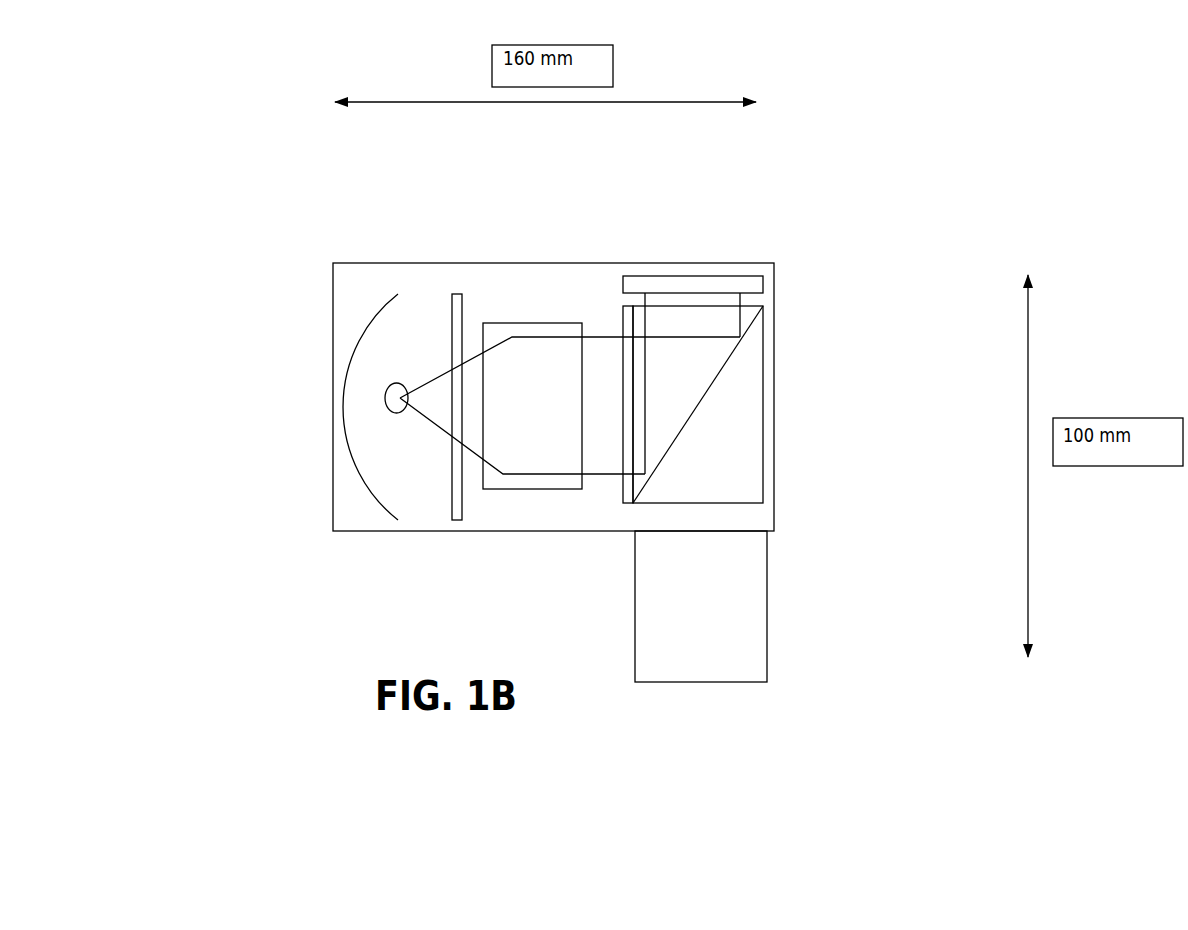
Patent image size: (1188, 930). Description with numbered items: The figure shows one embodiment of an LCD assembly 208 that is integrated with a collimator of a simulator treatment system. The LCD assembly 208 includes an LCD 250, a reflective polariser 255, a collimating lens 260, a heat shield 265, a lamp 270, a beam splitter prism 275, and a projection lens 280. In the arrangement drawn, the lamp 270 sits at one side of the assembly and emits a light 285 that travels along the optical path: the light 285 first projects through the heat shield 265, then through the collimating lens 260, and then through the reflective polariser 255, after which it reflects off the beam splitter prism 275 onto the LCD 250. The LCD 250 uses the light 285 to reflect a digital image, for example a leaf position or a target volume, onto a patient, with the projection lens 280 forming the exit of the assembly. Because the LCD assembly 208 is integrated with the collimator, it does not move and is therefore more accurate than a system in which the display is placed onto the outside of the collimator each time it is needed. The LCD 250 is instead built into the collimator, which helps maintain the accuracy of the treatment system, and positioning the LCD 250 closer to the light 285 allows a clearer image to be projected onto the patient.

The LCD assembly 208 is at (328, 494).
The LCD 250 is at (749, 275).
The reflective polariser 255 is at (619, 317).
The collimating lens 260 is at (524, 316).
The heat shield 265 is at (450, 292).
The lamp 270 is at (382, 399).
The beam splitter prism 275 is at (775, 396).
The projection lens 280 is at (769, 618).
The light 285 is at (432, 377).